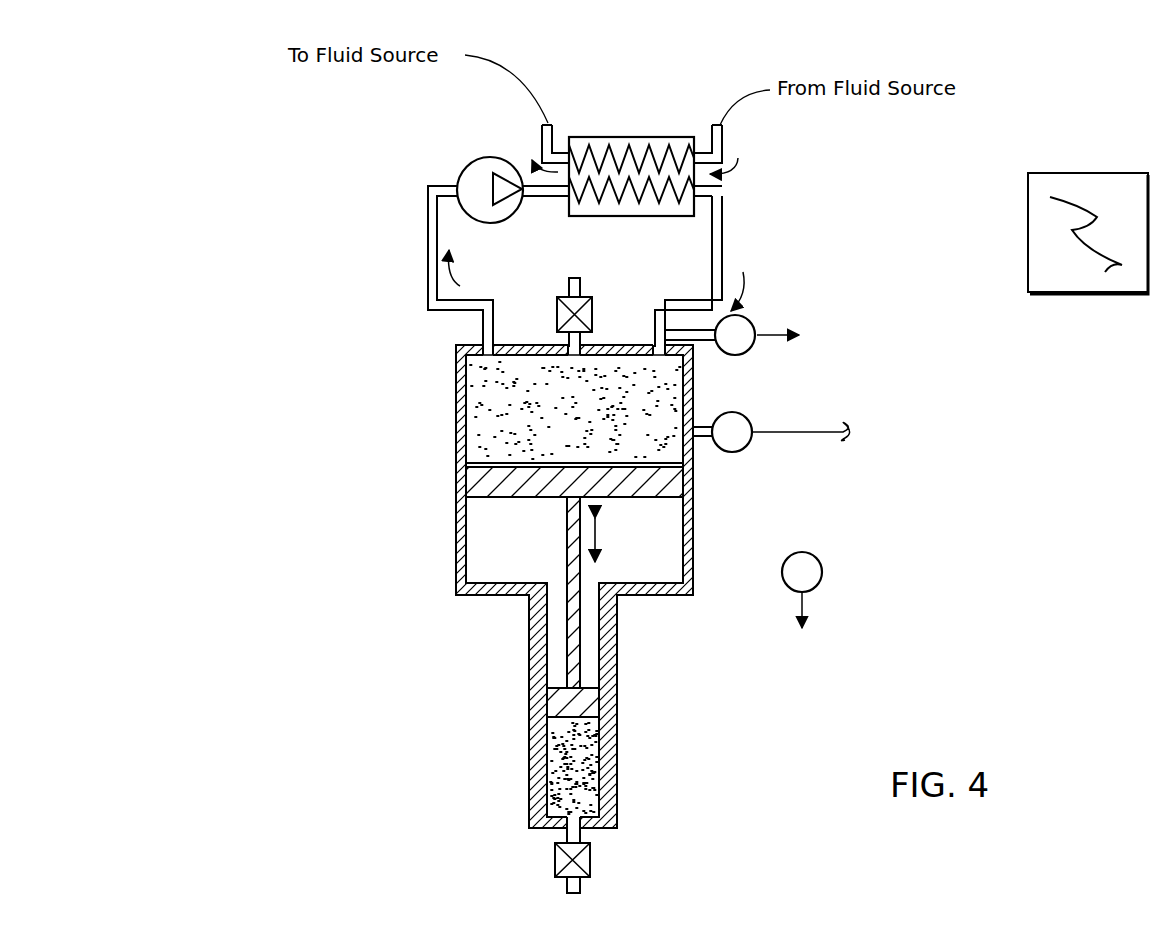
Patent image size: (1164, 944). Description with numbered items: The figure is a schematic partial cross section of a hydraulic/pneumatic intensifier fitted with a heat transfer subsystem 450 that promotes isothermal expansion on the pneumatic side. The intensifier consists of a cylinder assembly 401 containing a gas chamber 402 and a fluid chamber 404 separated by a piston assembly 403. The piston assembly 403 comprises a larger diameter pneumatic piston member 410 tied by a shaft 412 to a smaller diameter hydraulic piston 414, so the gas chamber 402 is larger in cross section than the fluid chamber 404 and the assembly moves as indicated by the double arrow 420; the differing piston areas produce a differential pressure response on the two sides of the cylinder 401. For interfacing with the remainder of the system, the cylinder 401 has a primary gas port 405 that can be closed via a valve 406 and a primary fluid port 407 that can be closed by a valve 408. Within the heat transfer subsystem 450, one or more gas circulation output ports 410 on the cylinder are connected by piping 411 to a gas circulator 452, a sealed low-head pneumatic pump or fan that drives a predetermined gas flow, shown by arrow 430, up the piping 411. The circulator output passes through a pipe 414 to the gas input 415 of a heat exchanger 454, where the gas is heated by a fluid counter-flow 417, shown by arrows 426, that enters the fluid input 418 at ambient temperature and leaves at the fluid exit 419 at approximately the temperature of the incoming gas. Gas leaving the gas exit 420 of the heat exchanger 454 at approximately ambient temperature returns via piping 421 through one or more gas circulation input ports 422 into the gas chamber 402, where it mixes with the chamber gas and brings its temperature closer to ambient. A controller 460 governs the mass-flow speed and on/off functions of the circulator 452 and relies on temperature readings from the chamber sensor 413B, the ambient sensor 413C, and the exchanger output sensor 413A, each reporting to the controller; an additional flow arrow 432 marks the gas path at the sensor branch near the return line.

The cylinder assembly 401 is at (454, 577).
The gas chamber 402 is at (475, 434).
The piston assembly 403 is at (477, 482).
The fluid chamber 404 is at (552, 763).
The primary gas port 405 is at (567, 340).
The valve 406 is at (592, 314).
The primary fluid port 407 is at (565, 838).
The valve 408 is at (592, 860).
The pneumatic piston member 410 is at (470, 365).
The piping 411 is at (428, 242).
The shaft 412 is at (582, 648).
The exchanger output sensor 413A is at (750, 349).
The chamber sensor 413B is at (750, 445).
The ambient sensor 413C is at (818, 560).
The hydraulic piston 414 is at (540, 182).
The gas input 415 is at (567, 198).
The fluid counter-flow 417 is at (723, 141).
The fluid input 418 is at (697, 143).
The fluid exit 419 is at (549, 125).
The gas exit 420 is at (698, 205).
The piping 421 is at (724, 243).
The gas circulation input ports 422 is at (697, 378).
The arrows 426 is at (533, 160).
The arrow 430 is at (452, 276).
The flow direction arrow 432 is at (746, 285).
The heat transfer subsystem 450 is at (257, 190).
The gas circulator 452 is at (460, 176).
The heat exchanger 454 is at (632, 137).
The controller 460 is at (1086, 173).